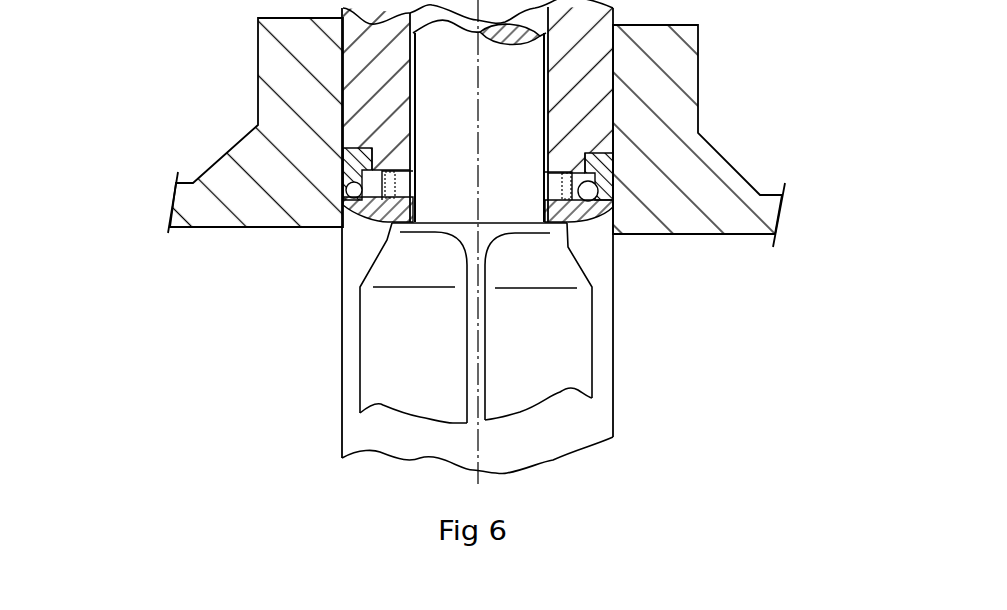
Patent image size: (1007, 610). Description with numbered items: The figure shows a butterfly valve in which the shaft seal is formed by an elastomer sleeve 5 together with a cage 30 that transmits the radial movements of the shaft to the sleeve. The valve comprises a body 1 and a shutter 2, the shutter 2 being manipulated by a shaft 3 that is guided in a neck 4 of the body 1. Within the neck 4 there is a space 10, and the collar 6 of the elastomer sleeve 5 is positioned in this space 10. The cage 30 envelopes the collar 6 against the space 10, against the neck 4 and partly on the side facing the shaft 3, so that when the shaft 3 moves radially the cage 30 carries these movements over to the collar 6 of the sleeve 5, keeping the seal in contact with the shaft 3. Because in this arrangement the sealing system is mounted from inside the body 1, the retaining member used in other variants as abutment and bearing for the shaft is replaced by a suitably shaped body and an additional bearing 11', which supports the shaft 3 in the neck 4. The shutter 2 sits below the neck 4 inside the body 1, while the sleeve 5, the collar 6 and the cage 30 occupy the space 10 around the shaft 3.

The body 1 is at (595, 105).
The shutter 2 is at (392, 337).
The shaft 3 is at (517, 80).
The neck 4 is at (432, 18).
The elastomer sleeve 5 is at (612, 198).
The collar 6 is at (665, 235).
The space 10 is at (355, 178).
The additional bearing 11' is at (313, 114).
The cage 30 is at (613, 173).